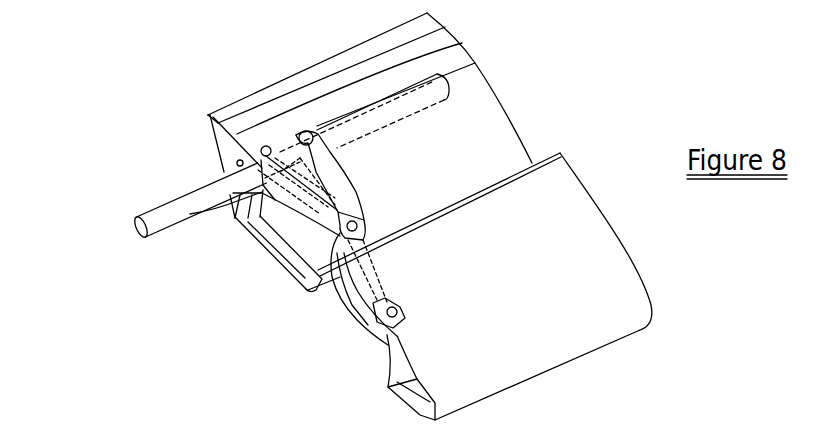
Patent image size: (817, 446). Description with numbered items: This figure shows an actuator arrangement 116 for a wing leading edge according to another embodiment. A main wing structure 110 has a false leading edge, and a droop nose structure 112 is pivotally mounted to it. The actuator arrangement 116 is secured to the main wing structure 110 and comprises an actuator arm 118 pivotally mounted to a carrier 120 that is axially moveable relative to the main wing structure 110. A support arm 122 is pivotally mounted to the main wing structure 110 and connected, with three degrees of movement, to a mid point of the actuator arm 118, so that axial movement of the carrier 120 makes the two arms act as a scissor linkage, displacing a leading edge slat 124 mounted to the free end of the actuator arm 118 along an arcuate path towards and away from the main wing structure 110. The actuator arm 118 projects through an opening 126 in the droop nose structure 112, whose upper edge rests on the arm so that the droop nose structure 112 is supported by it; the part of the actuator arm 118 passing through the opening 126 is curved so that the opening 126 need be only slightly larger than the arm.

The main wing structure 110 is at (303, 77).
The droop nose structure 112 is at (313, 242).
The actuator arrangement 116 is at (342, 322).
The actuator arm 118 is at (340, 293).
The carrier 120 is at (435, 92).
The support arm 122 is at (247, 201).
The leading edge slat 124 is at (620, 290).
The opening 126 is at (307, 258).